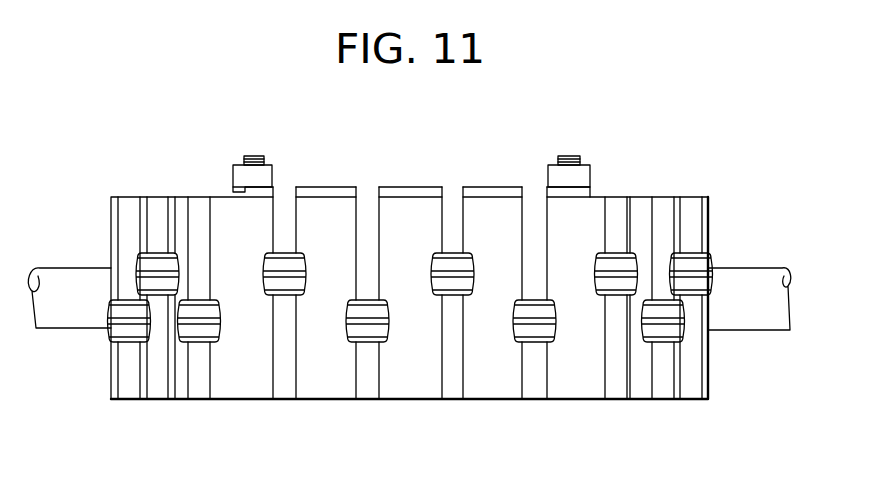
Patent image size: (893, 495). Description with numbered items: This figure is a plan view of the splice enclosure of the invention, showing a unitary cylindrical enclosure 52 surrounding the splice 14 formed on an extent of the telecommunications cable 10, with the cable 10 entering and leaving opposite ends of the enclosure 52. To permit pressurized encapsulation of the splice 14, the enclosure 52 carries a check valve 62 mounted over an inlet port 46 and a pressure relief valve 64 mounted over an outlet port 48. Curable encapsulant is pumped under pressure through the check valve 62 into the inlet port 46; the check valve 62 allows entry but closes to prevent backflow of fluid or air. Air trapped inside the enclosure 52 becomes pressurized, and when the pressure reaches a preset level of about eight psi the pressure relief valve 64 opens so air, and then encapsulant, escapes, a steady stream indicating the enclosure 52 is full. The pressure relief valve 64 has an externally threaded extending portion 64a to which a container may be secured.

The telecommunications cable 10 is at (758, 306).
The splice 14 is at (104, 341).
The inlet port 46 is at (240, 193).
The outlet port 48 is at (588, 193).
The unitary cylindrical enclosure 52 is at (643, 203).
The check valve 62 is at (240, 165).
The pressure relief valve 64 is at (591, 174).
The extending portion 64a is at (562, 156).